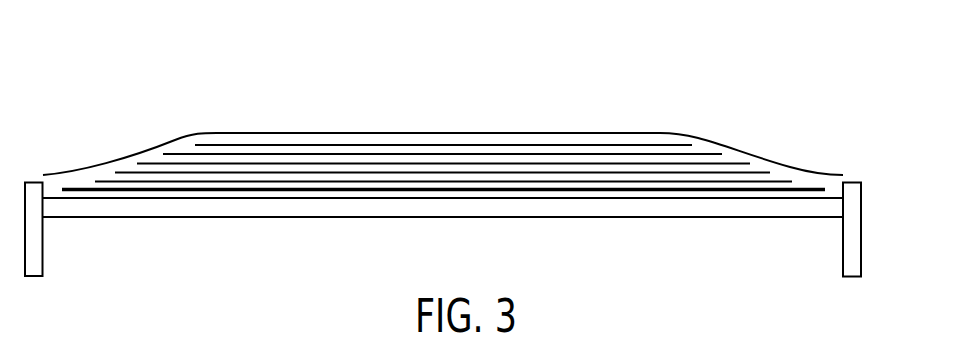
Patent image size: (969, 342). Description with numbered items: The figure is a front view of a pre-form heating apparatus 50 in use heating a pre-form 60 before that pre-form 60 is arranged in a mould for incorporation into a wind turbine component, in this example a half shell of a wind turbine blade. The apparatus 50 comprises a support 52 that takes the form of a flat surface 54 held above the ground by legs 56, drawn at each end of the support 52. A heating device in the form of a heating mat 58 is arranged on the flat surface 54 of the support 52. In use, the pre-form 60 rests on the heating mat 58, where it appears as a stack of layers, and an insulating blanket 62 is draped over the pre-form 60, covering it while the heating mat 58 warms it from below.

The pre-form heating apparatus 50 is at (657, 91).
The support 52 is at (185, 206).
The flat surface 54 is at (432, 196).
The legs 56 is at (32, 246).
The heating mat 58 is at (540, 187).
The pre-form 60 is at (287, 163).
The insulating blanket 62 is at (175, 138).